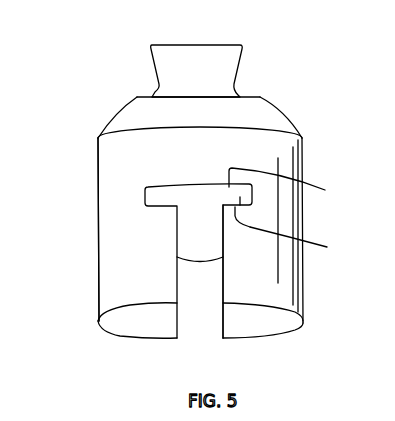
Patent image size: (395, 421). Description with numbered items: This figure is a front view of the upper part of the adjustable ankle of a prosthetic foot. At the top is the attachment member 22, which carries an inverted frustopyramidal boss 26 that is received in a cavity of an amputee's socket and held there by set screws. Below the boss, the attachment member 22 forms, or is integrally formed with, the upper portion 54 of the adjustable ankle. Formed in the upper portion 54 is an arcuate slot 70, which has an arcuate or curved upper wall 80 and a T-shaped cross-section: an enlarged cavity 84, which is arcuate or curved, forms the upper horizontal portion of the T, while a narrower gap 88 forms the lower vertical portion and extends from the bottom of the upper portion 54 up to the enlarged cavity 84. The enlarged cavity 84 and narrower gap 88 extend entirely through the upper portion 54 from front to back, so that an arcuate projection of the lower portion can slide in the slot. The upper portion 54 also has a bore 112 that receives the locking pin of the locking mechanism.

The inverted frustopyramidal boss 26 is at (154, 68).
The attachment member 22 is at (117, 115).
The upper portion 54 is at (304, 158).
The arcuate slot 70 is at (156, 186).
The upper wall 80 is at (292, 197).
The enlarged cavity 84 is at (303, 244).
The narrower gap 88 is at (222, 290).
The bore 112 is at (102, 258).